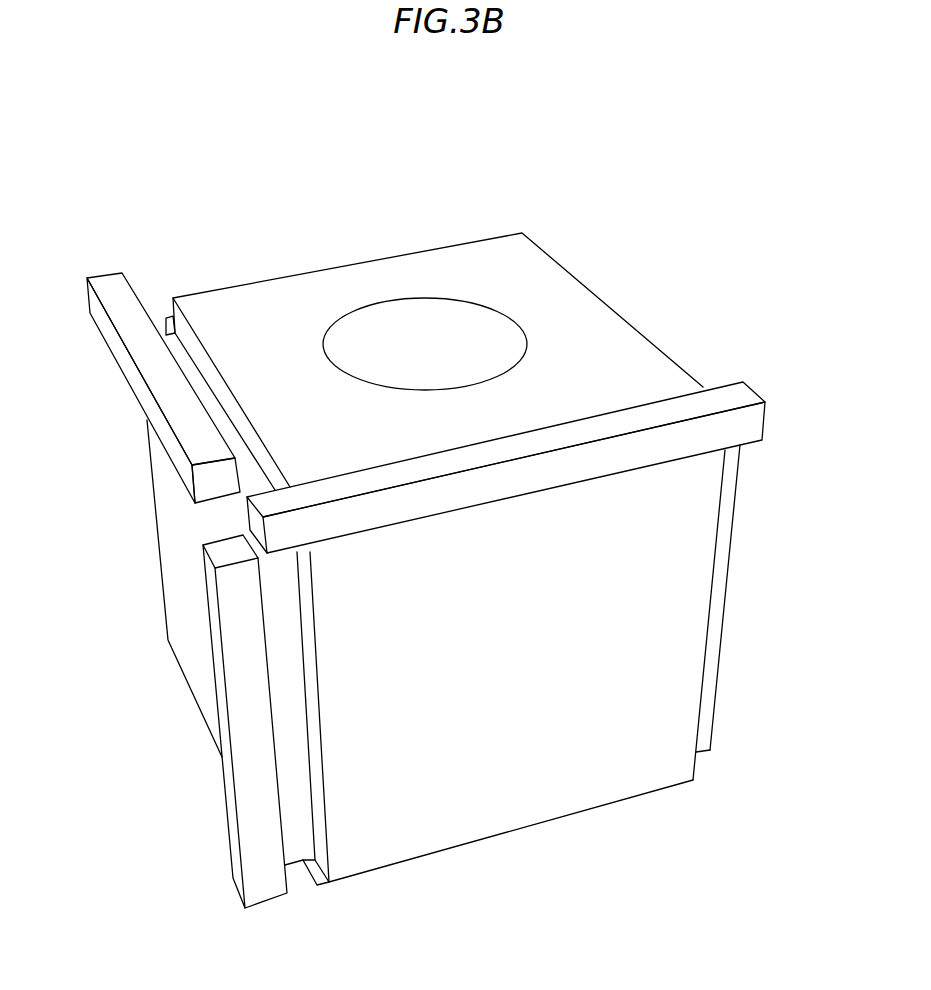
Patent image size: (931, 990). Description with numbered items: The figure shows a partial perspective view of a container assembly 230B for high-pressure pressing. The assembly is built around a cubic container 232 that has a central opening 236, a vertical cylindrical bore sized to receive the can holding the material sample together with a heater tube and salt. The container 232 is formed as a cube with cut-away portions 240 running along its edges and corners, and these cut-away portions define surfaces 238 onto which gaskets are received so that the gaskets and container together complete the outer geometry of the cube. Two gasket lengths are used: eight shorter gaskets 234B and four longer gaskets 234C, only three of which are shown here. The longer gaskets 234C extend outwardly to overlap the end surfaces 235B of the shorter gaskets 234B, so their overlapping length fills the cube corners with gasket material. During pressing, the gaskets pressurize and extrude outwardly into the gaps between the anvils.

The container assembly 230B is at (160, 227).
The cubic container 232 is at (531, 654).
The shorter gaskets 234B is at (95, 330).
The longer gaskets 234C is at (606, 405).
The end surfaces of the shorter gaskets 235B is at (232, 550).
The central opening 236 is at (446, 356).
The surfaces defined by cut-away portions 238 is at (205, 373).
The cut-away portions 240 is at (233, 400).